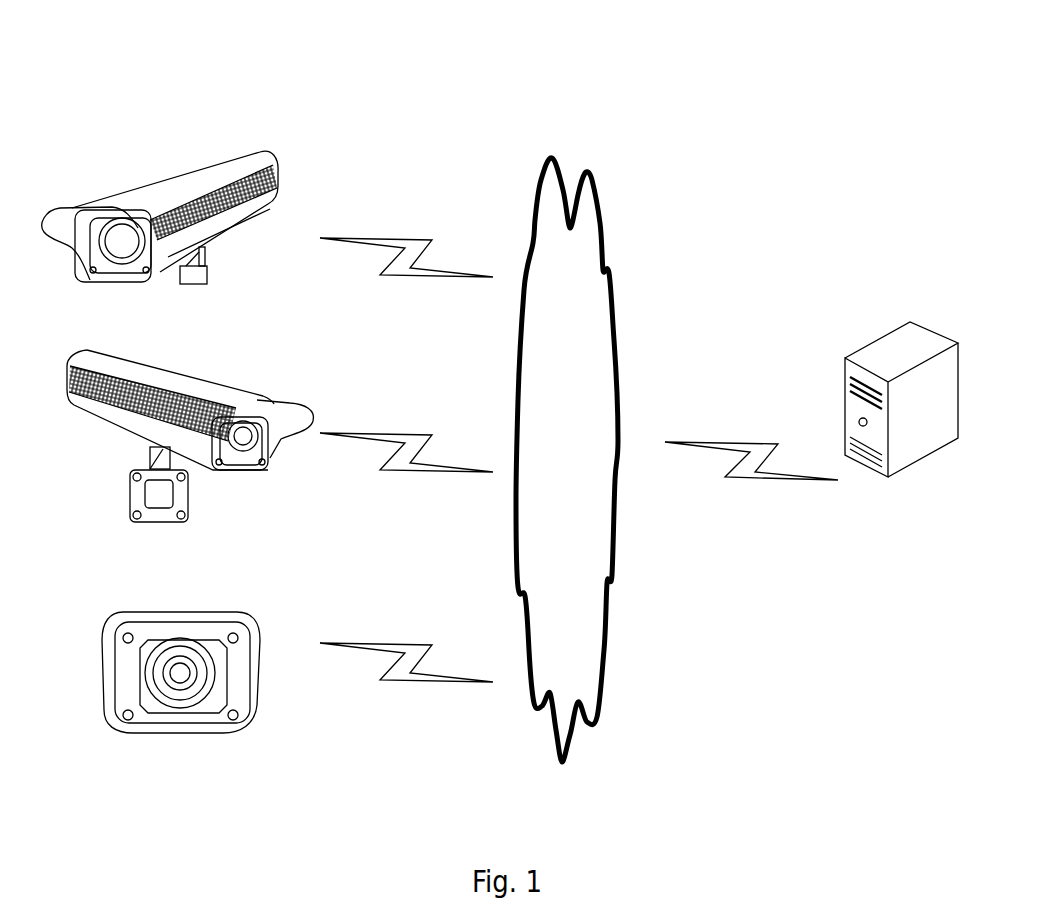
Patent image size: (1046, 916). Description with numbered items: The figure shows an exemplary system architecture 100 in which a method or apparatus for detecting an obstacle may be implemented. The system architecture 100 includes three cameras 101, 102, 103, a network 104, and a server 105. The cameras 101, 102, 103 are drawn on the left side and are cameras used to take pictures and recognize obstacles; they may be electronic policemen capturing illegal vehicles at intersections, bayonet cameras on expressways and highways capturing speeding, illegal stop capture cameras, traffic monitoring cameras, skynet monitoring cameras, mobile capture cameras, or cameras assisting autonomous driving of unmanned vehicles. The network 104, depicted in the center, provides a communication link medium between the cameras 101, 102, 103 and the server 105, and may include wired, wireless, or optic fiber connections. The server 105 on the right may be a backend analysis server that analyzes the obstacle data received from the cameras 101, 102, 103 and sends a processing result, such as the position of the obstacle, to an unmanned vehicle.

The system architecture 100 is at (868, 50).
The camera 101 is at (160, 238).
The camera 102 is at (190, 454).
The camera 103 is at (181, 694).
The network 104 is at (567, 460).
The server 105 is at (901, 440).